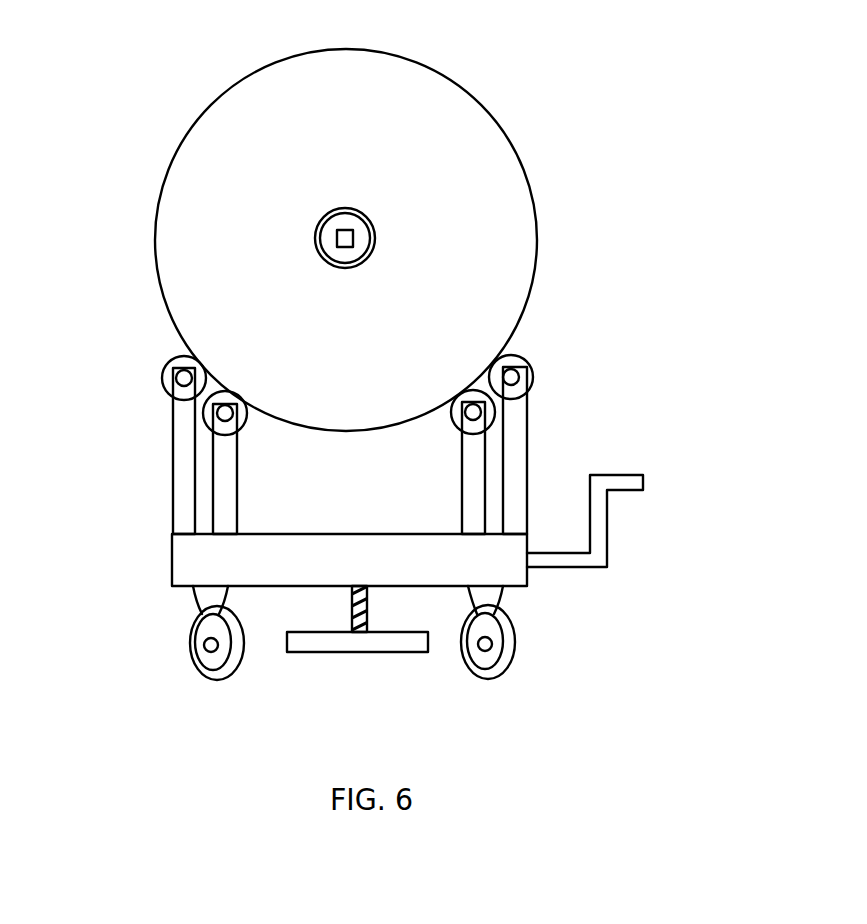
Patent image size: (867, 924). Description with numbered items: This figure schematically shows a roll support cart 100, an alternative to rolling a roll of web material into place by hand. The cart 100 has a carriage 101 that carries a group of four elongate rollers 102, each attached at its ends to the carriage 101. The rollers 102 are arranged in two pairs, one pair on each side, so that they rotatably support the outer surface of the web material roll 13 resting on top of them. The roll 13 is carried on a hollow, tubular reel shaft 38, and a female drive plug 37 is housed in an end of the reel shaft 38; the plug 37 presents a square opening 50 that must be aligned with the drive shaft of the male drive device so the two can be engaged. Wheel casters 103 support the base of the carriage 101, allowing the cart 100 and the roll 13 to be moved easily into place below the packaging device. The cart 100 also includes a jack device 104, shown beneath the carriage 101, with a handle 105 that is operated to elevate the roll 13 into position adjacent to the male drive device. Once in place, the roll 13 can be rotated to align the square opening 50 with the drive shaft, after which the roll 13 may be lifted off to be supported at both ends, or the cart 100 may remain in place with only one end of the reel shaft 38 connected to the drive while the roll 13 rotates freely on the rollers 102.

The web material roll 13 is at (498, 183).
The female drive plug 37 is at (345, 222).
The reel shaft 38 is at (373, 232).
The square opening 50 is at (348, 247).
The roll support cart 100 is at (615, 315).
The carriage 101 is at (185, 563).
The elongate rollers 102 is at (168, 358).
The wheel casters 103 is at (230, 660).
The jack device 104 is at (382, 643).
The handle 105 is at (602, 528).